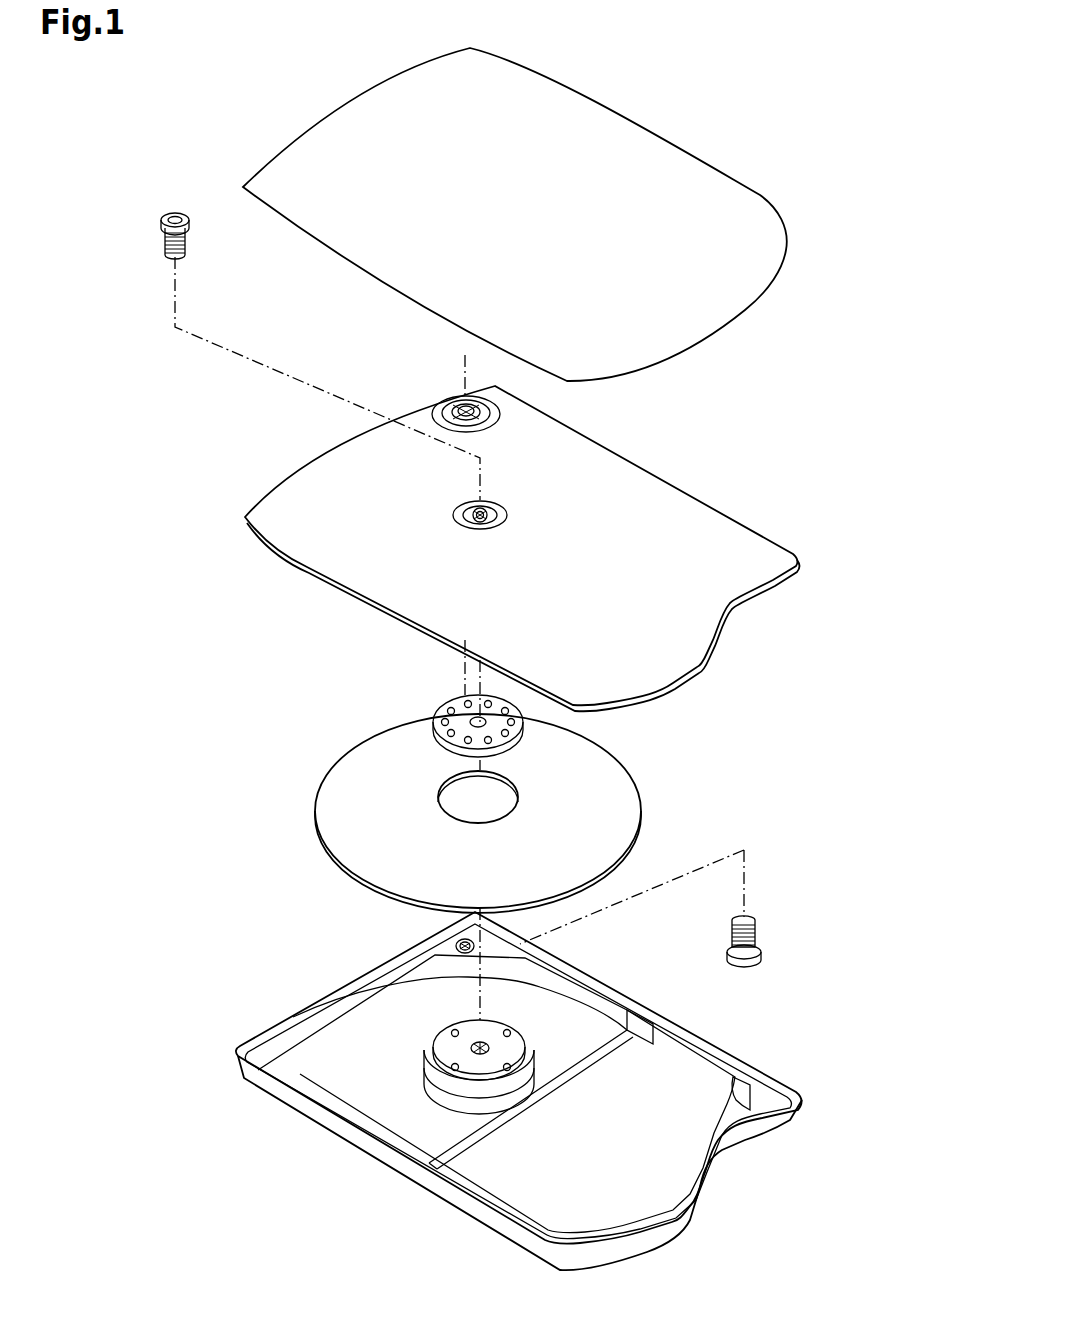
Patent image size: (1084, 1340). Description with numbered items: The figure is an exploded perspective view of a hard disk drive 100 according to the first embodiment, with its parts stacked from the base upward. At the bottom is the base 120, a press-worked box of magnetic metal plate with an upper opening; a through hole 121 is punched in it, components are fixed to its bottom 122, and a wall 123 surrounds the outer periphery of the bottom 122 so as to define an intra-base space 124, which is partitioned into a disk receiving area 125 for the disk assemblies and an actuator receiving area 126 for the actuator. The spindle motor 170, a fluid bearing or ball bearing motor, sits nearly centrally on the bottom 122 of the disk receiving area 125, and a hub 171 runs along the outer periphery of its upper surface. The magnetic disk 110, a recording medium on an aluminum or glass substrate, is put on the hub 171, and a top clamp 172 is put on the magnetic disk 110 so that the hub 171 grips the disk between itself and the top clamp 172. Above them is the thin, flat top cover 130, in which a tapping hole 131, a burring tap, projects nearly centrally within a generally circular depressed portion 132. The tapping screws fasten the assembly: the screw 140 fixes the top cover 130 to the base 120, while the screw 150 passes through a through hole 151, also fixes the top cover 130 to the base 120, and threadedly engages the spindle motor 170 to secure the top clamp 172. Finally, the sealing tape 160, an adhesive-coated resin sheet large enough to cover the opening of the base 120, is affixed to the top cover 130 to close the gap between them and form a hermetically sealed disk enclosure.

The hard disk drive 100 is at (267, 97).
The magnetic disk 110 is at (620, 778).
The base 120 is at (653, 1238).
The through hole 121 is at (410, 945).
The bottom 122 is at (660, 1155).
The wall 123 is at (763, 1117).
The intra-base space 124 is at (340, 1233).
The disk receiving area 125 is at (395, 1132).
The actuator receiving area 126 is at (473, 1175).
The top cover 130 is at (767, 546).
The tapping hole 131 is at (587, 437).
The depressed portion 132 is at (440, 403).
The screw 140 is at (760, 948).
The screw 150 is at (173, 210).
The through hole 151 is at (508, 494).
The sealing tape 160 is at (603, 120).
The spindle motor 170 is at (418, 1042).
The hub 171 is at (428, 1065).
The top clamp 172 is at (432, 717).